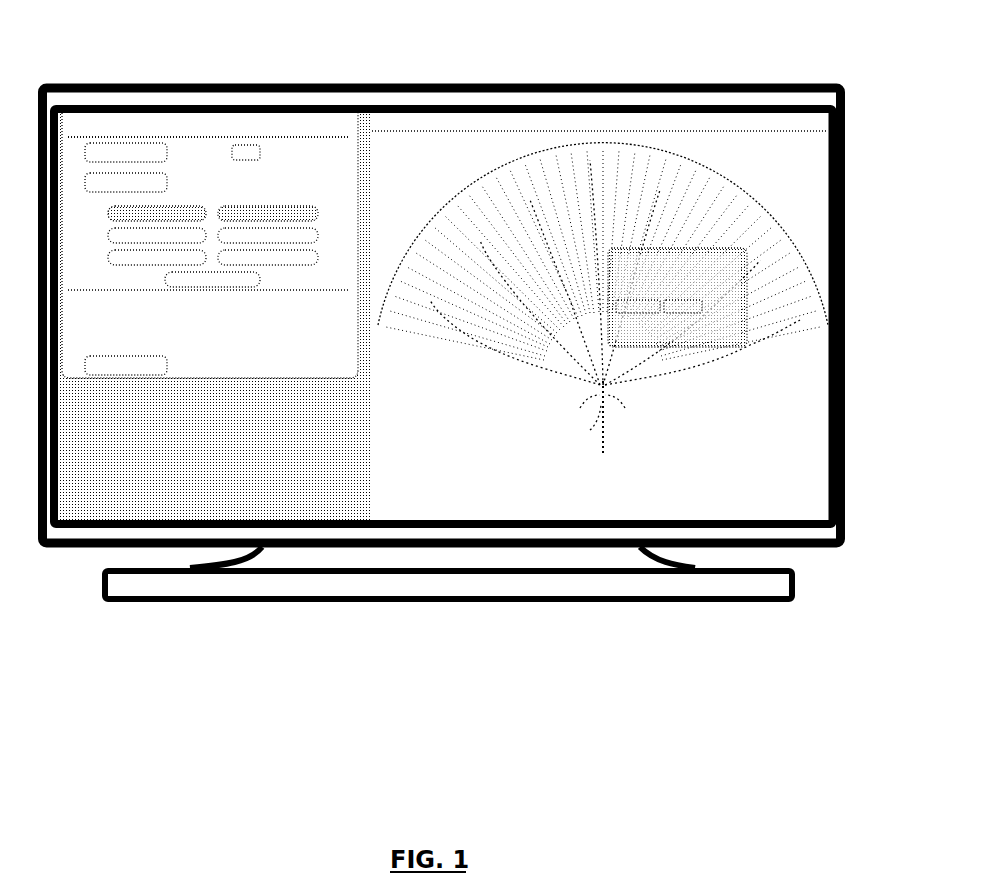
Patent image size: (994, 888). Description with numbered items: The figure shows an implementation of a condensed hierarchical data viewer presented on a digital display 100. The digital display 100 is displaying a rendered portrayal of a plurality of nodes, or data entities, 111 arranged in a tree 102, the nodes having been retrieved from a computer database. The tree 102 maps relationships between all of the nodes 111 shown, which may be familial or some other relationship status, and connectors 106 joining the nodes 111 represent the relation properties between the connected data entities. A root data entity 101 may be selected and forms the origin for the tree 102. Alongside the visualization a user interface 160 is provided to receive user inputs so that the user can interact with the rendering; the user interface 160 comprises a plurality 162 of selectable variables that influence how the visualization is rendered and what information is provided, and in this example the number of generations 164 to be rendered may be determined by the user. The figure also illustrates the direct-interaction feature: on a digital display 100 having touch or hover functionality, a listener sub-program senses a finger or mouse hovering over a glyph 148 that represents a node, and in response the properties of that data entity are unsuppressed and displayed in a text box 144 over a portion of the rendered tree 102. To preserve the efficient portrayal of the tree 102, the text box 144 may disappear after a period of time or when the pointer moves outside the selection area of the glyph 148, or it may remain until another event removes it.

The digital display 100 is at (505, 60).
The root data entity 101 is at (618, 440).
The tree 102 is at (465, 400).
The connectors 106 is at (585, 428).
The nodes (data entities) 111 is at (582, 410).
The text box 144 is at (703, 335).
The glyph 148 is at (600, 235).
The user interface 160 is at (288, 142).
The plurality of selectable variables 162 is at (98, 225).
The number of generations 164 is at (238, 143).